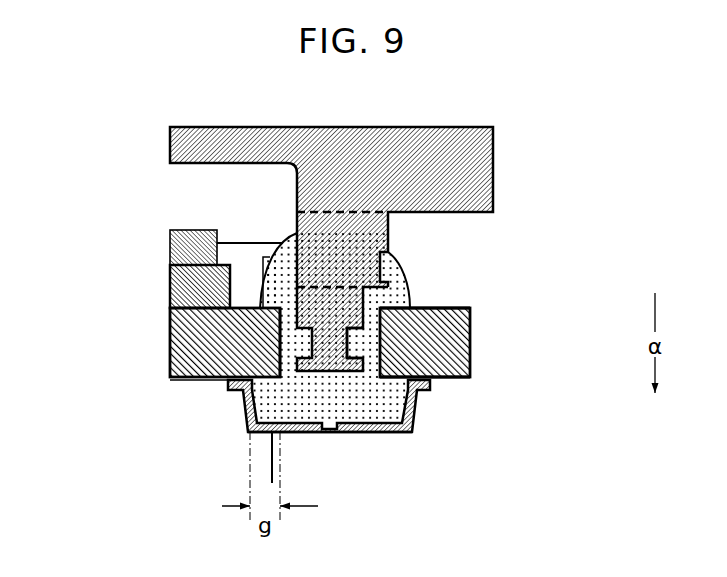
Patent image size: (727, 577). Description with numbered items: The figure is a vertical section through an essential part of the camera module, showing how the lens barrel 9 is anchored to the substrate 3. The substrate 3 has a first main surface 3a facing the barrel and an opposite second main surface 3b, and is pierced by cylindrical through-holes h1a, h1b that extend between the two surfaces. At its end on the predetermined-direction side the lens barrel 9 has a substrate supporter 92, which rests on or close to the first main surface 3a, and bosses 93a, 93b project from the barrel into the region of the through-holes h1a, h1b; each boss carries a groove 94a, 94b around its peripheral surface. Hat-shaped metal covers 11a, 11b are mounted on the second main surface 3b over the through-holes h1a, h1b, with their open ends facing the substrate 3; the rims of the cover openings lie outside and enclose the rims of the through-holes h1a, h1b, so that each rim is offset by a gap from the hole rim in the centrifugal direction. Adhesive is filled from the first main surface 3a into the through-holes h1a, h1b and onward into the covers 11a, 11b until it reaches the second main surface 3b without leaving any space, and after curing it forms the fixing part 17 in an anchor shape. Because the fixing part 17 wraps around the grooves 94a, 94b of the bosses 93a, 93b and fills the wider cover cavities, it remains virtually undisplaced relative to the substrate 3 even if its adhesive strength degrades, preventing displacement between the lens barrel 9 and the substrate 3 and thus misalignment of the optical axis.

The lens barrel 9 is at (503, 155).
The substrate supporter 92 is at (385, 241).
The boss 93a is at (473, 307).
The boss 93b is at (357, 311).
The groove 94a is at (398, 419).
The groove 94b is at (347, 336).
The substrate 3 is at (470, 338).
The first main surface 3a is at (462, 307).
The second main surface 3b is at (470, 378).
The cover 11a is at (439, 419).
The cover 11b is at (414, 402).
The fixing part (adhesive) 17 is at (411, 416).
The through-hole h1a is at (171, 272).
The through-hole h1b is at (292, 315).